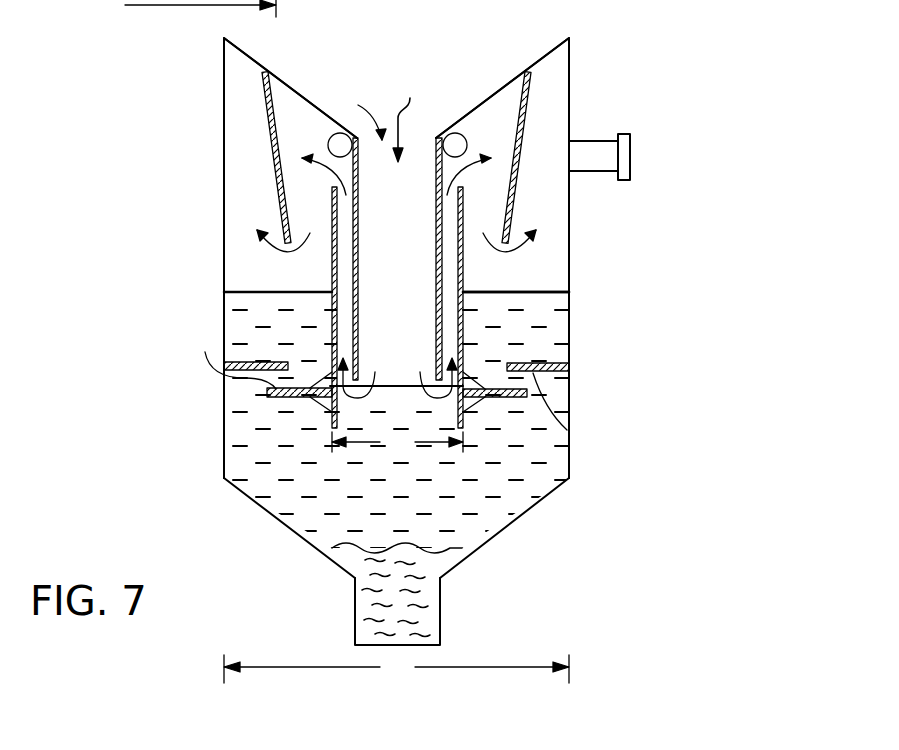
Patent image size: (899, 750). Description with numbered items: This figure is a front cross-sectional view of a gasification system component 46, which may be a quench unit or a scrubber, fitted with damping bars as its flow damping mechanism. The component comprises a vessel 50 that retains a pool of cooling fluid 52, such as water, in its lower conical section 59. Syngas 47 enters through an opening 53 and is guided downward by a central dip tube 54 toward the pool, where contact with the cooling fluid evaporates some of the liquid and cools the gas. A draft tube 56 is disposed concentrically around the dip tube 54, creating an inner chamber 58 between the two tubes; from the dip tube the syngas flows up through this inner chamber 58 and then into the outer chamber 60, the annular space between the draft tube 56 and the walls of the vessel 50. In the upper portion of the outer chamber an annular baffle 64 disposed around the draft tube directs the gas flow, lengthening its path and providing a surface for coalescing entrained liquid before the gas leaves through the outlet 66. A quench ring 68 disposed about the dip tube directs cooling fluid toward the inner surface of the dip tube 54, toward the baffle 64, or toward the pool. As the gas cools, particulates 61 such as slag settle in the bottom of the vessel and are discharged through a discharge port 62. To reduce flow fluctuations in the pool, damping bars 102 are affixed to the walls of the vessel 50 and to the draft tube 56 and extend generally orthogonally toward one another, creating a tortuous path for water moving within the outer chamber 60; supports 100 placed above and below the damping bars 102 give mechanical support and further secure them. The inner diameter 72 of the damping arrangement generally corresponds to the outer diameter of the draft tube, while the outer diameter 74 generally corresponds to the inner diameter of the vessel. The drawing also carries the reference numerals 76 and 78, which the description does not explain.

The gasification system component 46 is at (603, 20).
The syngas 47 is at (408, 117).
The vessel 50 is at (570, 232).
The cooling fluid 52 is at (237, 482).
The opening 53 is at (355, 119).
The dip tube 54 is at (352, 300).
The draft tube 56 is at (334, 262).
The inner chamber 58 is at (435, 247).
The conical section 59 is at (516, 521).
The outer chamber 60 is at (557, 270).
The particulates 61 is at (358, 607).
The discharge port 62 is at (442, 605).
The annular baffle 64 is at (524, 124).
The outlet 66 is at (627, 136).
The quench ring 68 is at (462, 134).
The inner diameter 72 is at (397, 443).
The outer diameter 74 is at (329, 341).
The liquid level 76 is at (230, 291).
The cross bar 78 is at (390, 380).
The supports 100 is at (233, 360).
The damping bars 102 is at (290, 397).